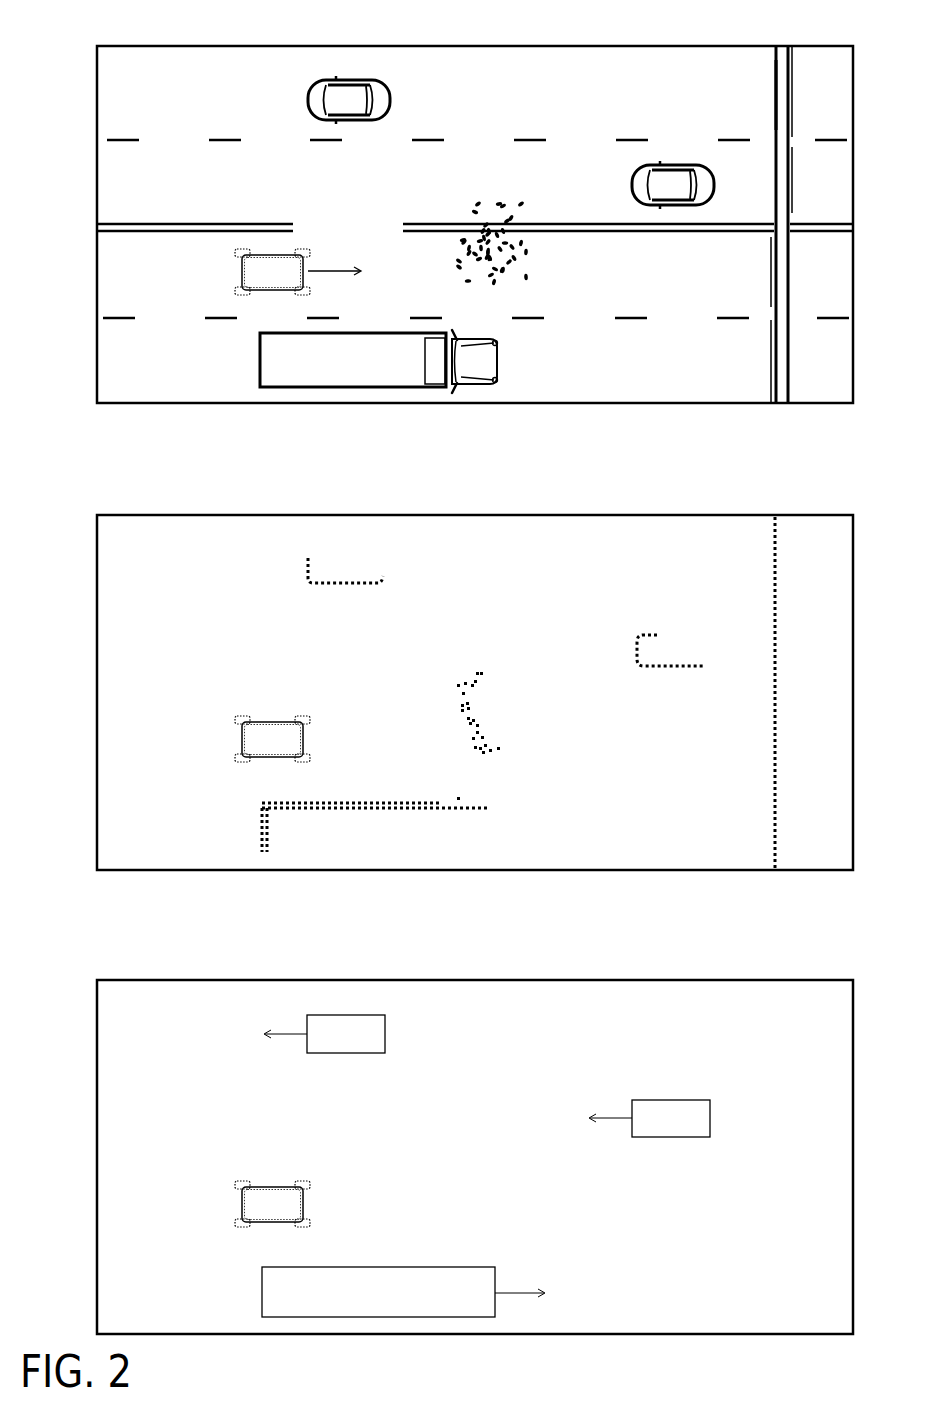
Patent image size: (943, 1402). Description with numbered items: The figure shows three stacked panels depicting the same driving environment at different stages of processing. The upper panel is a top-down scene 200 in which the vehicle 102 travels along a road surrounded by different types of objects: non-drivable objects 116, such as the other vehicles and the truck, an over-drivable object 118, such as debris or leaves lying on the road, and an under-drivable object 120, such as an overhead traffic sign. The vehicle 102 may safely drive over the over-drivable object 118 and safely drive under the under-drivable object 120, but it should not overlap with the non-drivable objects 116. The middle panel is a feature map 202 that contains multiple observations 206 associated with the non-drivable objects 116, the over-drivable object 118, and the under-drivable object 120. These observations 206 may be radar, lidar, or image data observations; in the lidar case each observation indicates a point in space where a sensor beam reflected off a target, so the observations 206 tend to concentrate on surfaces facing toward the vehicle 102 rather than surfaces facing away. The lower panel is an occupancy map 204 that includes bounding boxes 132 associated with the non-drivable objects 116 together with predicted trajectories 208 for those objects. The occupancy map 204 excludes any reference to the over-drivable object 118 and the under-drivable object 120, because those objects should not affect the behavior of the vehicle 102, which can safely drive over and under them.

The top-down scene 200 is at (123, 40).
The feature map 202 is at (123, 506).
The occupancy map 204 is at (123, 973).
The vehicle 102 is at (307, 240).
The non-drivable object 116 is at (629, 183).
The over-drivable object 118 is at (537, 271).
The under-drivable object 120 is at (773, 102).
The bounding box 132 is at (392, 1028).
The observation 206 is at (769, 566).
The predicted trajectory 208 is at (603, 1110).